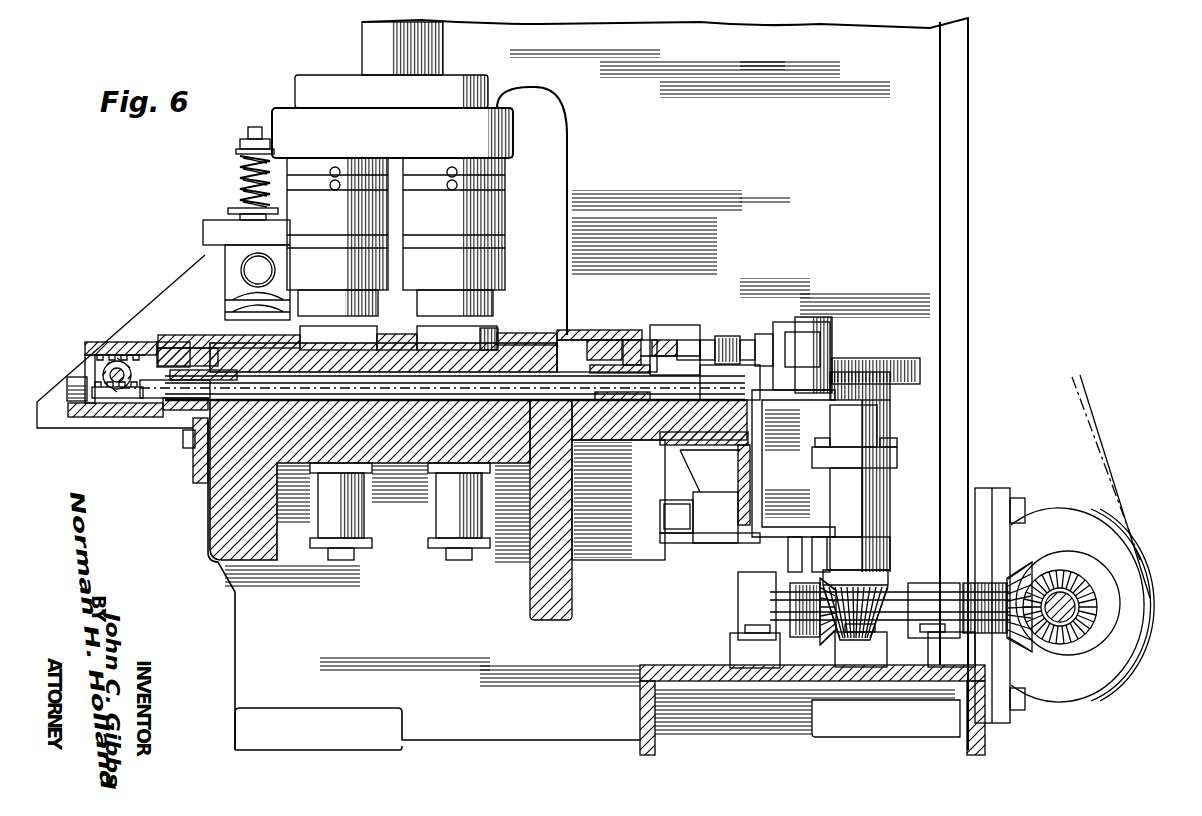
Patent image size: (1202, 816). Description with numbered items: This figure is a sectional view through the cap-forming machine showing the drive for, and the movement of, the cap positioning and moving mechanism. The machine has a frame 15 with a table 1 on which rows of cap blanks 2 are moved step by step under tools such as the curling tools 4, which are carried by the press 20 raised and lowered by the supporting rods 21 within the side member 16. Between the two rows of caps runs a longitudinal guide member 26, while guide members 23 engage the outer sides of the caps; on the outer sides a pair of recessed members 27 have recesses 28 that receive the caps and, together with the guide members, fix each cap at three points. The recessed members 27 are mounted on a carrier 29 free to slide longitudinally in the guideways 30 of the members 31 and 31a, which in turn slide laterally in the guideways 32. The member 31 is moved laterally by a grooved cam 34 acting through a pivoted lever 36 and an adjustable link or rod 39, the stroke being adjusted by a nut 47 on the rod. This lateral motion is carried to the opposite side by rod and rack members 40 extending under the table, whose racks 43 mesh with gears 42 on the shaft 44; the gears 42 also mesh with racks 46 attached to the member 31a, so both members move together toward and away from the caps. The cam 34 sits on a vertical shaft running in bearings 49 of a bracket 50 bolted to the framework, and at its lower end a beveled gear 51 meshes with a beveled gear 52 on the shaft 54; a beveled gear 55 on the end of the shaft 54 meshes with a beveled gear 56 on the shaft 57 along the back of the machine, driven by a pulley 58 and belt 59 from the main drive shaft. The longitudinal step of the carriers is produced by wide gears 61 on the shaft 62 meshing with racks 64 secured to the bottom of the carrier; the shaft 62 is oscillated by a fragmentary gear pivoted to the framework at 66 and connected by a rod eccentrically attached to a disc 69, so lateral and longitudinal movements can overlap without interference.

The table 1 is at (557, 326).
The cap blanks 2 is at (488, 326).
The curling tools 4 is at (503, 251).
The frame 15 is at (204, 539).
The side member 16 is at (928, 256).
The press 20 is at (520, 128).
The supporting rods 21 is at (372, 48).
The guide members 23 is at (290, 342).
The longitudinal guide member 26 is at (392, 334).
The recessed members 27 is at (228, 340).
The recesses 28 is at (500, 332).
The carrier 29 is at (187, 348).
The guideways 30 is at (660, 330).
The member 31 is at (700, 332).
The member 31a is at (172, 342).
The guideways 32 is at (68, 378).
The grooved cam 34 is at (897, 358).
The pivoted lever 36 is at (835, 345).
The adjustable link or rod 39 is at (790, 322).
The rod and rack members 40 is at (160, 396).
The gears 42 is at (103, 368).
The racks 43 is at (117, 383).
The shaft 44 is at (100, 398).
The racks 46 is at (110, 343).
The nut 47 is at (737, 340).
The bearings 49 is at (880, 396).
The bracket 50 is at (766, 474).
The beveled gear 51 is at (890, 576).
The beveled gear 52 is at (822, 646).
The shaft 54 is at (895, 602).
The beveled gear 55 is at (1032, 655).
The beveled gear 56 is at (1062, 572).
The shaft 57 is at (1066, 620).
The pulley 58 is at (1120, 654).
The belt 59 is at (1085, 445).
The gears 61 is at (185, 436).
The shaft 62 is at (195, 470).
The racks 64 is at (200, 330).
The pivot 66 is at (738, 530).
The disc 69 is at (805, 655).